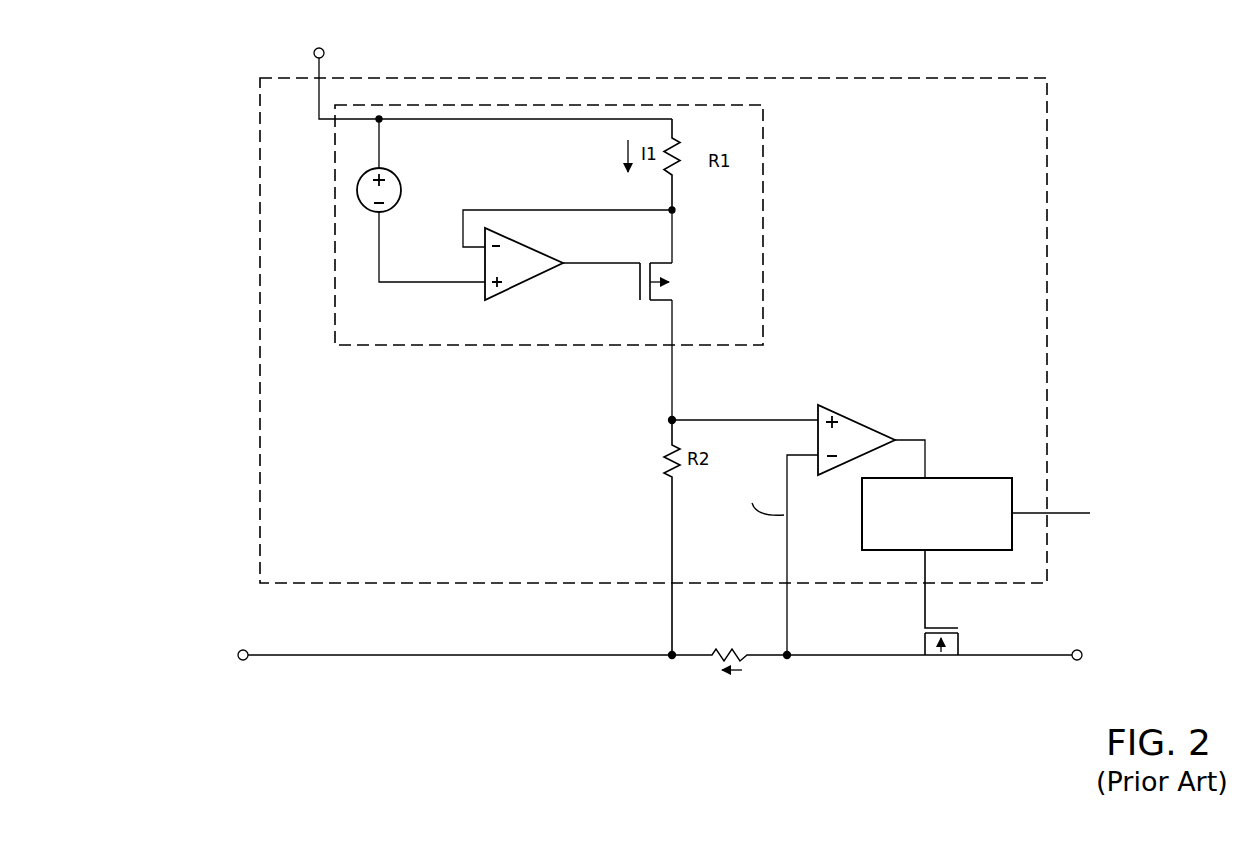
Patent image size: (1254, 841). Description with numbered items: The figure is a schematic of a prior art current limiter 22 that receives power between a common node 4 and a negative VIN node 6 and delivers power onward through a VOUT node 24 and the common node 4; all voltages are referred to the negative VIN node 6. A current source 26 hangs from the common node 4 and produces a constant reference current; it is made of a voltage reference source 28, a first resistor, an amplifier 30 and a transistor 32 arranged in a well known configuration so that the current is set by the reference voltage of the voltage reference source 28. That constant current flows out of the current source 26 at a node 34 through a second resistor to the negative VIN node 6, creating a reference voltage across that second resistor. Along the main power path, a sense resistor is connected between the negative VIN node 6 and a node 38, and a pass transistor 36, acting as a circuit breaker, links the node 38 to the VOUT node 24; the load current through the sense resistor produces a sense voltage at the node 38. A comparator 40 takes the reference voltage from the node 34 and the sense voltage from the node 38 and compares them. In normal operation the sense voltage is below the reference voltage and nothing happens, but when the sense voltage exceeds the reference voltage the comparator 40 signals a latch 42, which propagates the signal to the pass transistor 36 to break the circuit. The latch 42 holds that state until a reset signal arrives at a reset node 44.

The current limiter 22 is at (168, 70).
The common node 4 is at (322, 70).
The current source 26 is at (763, 190).
The voltage reference source 28 is at (400, 178).
The amplifier 30 is at (528, 283).
The transistor 32 is at (679, 283).
The node 34 is at (668, 418).
The pass transistor 36 is at (940, 662).
The node 38 is at (784, 660).
The comparator 40 is at (858, 418).
The latch 42 is at (966, 478).
The reset node 44 is at (1072, 513).
The negative VIN node 6 is at (239, 660).
The VOUT node 24 is at (1072, 660).